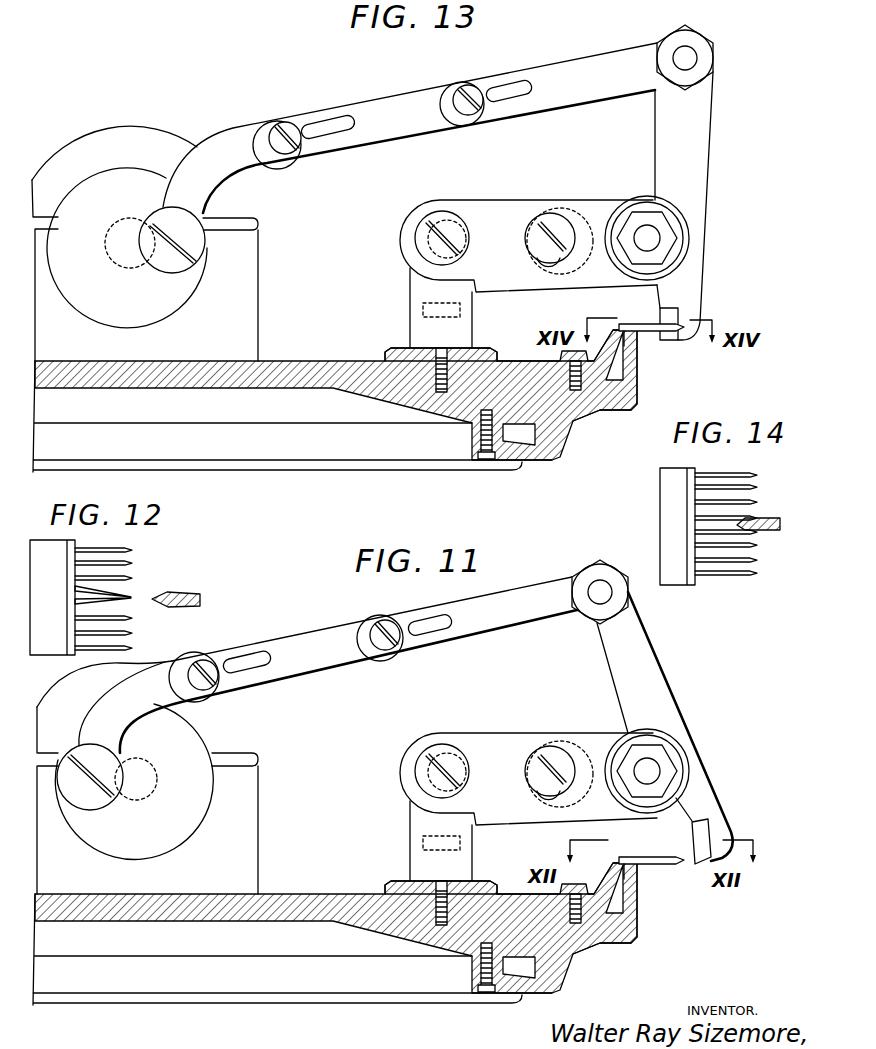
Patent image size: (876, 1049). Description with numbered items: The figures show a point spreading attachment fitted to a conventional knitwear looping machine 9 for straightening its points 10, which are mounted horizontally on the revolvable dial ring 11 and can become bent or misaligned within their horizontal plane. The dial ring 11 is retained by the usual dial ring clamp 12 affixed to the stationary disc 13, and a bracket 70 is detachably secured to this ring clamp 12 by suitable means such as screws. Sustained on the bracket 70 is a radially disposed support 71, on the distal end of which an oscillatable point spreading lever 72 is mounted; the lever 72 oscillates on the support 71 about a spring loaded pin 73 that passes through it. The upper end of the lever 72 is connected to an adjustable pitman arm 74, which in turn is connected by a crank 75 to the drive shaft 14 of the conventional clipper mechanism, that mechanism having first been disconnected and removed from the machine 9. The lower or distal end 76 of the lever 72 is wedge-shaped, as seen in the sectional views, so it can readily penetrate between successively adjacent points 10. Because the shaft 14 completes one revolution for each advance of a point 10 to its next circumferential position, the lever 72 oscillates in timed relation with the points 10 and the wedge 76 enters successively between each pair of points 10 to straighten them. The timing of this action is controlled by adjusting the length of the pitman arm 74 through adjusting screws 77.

In FIG. 13, the knitwear looping machine 9 is at (350, 476).
In FIG. 11, the knitwear looping machine 9 is at (292, 971).
In FIG. 13, the points 10 is at (645, 325).
In FIG. 11, the points 10 is at (651, 852).
In FIG. 12, the points 10 is at (134, 578).
In FIG. 14, the points 10 is at (757, 488).
In FIG. 13, the dial ring 11 is at (507, 370).
In FIG. 11, the dial ring 11 is at (567, 900).
In FIG. 13, the dial ring clamp 12 is at (390, 356).
In FIG. 11, the dial ring clamp 12 is at (417, 878).
In FIG. 13, the stationary disc 13 is at (290, 372).
In FIG. 11, the stationary disc 13 is at (336, 926).
In FIG. 13, the drive shaft 14 is at (173, 117).
In FIG. 11, the drive shaft 14 is at (167, 862).
In FIG. 13, the bracket 70 is at (420, 321).
In FIG. 11, the bracket 70 is at (415, 841).
In FIG. 13, the support 71 is at (501, 202).
In FIG. 11, the support 71 is at (528, 762).
In FIG. 13, the point spreading lever 72 is at (658, 145).
In FIG. 11, the point spreading lever 72 is at (656, 683).
In FIG. 13, the spring loaded pin 73 is at (649, 240).
In FIG. 11, the spring loaded pin 73 is at (677, 771).
In FIG. 13, the pitman arm 74 is at (588, 85).
In FIG. 11, the pitman arm 74 is at (520, 597).
In FIG. 13, the crank 75 is at (162, 268).
In FIG. 11, the crank 75 is at (98, 752).
In FIG. 13, the wedge-shaped distal end 76 is at (668, 317).
In FIG. 11, the wedge-shaped distal end 76 is at (708, 848).
In FIG. 12, the wedge-shaped distal end 76 is at (168, 596).
In FIG. 14, the wedge-shaped distal end 76 is at (765, 520).
In FIG. 13, the adjusting screws 77 is at (462, 112).
In FIG. 11, the adjusting screws 77 is at (382, 630).